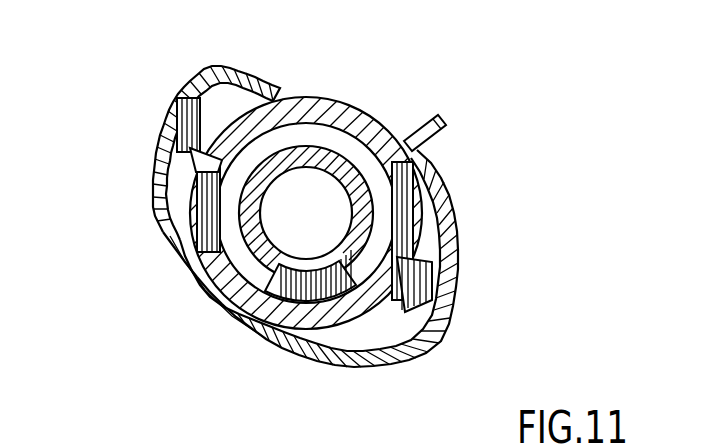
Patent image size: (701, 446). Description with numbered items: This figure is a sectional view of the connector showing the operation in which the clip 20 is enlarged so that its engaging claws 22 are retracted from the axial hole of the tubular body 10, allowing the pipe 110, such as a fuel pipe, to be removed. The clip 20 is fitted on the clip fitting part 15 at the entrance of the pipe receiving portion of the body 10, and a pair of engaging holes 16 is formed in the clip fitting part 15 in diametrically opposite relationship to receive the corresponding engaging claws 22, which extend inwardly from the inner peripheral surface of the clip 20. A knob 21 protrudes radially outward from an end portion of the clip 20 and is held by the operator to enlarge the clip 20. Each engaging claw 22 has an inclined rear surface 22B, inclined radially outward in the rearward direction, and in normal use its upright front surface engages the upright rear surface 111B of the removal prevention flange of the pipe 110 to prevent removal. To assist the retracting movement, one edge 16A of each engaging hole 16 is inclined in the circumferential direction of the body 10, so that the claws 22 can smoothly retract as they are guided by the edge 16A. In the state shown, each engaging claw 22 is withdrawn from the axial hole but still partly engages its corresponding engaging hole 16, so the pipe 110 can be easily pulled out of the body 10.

The tubular body 10 is at (341, 241).
The clip fitting part 15 is at (342, 95).
The engaging holes 16 is at (200, 200).
The edge of engaging hole 16A is at (200, 170).
The clip 20 is at (456, 195).
The knob 21 is at (450, 114).
The engaging claws 22 is at (200, 110).
The inclined rear surface 22B is at (505, 300).
The pipe 110 is at (367, 300).
The upright rear surface 111B is at (238, 327).